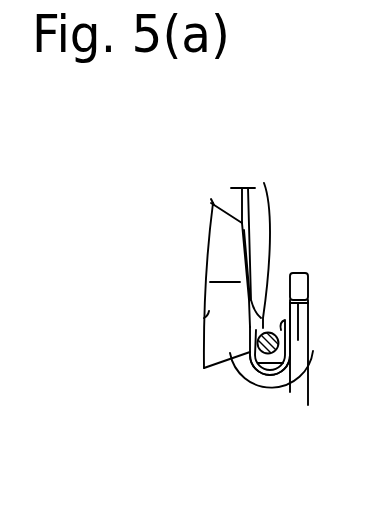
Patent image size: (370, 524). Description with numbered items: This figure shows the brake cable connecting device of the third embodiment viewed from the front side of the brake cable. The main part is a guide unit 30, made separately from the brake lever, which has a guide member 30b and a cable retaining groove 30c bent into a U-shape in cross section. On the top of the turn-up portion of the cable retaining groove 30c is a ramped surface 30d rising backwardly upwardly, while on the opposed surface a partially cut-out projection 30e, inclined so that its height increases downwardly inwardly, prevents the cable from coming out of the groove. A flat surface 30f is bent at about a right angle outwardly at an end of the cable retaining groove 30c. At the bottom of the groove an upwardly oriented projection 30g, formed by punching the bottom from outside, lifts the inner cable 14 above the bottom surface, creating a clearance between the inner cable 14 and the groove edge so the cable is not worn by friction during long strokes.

The guide unit 30 is at (219, 190).
The guide member 30b is at (203, 324).
The cable retaining groove 30c is at (310, 386).
The ramped surface 30d is at (300, 285).
The projection 30e is at (264, 183).
The flat surface 30f is at (266, 388).
The projection 30g is at (248, 382).
The inner cable 14 is at (228, 360).